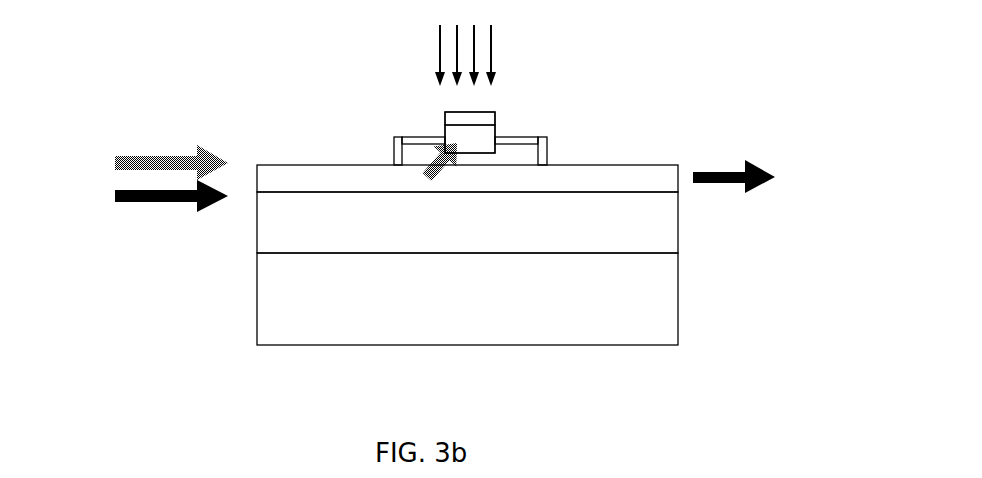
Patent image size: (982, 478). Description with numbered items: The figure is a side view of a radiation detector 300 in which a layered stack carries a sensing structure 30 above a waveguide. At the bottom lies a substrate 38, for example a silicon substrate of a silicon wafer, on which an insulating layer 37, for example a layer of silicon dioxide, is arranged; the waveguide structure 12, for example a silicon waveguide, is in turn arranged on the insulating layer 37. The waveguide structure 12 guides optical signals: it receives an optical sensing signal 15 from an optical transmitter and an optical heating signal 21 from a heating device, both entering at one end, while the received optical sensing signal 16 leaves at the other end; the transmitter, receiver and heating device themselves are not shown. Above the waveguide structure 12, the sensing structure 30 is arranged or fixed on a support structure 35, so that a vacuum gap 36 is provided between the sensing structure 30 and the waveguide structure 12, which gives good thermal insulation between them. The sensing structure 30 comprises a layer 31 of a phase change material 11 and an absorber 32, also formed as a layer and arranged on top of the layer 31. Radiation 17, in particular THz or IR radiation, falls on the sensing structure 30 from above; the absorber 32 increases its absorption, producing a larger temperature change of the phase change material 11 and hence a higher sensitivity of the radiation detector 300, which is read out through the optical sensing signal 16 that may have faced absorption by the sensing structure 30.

The phase change material 11 is at (452, 142).
The waveguide structure 12 is at (642, 178).
The optical sensing signal 15 is at (115, 197).
The received optical sensing signal 16 is at (705, 183).
The radiation 17 is at (495, 48).
The optical heating signal 21 is at (115, 163).
The sensing structure 30 is at (453, 147).
The layer of phase change material 31 is at (495, 133).
The absorber 32 is at (495, 117).
The support structure 35 is at (546, 150).
The vacuum gap 36 is at (477, 157).
The insulating layer 37 is at (270, 243).
The substrate 38 is at (270, 316).
The radiation detector 300 is at (828, 440).